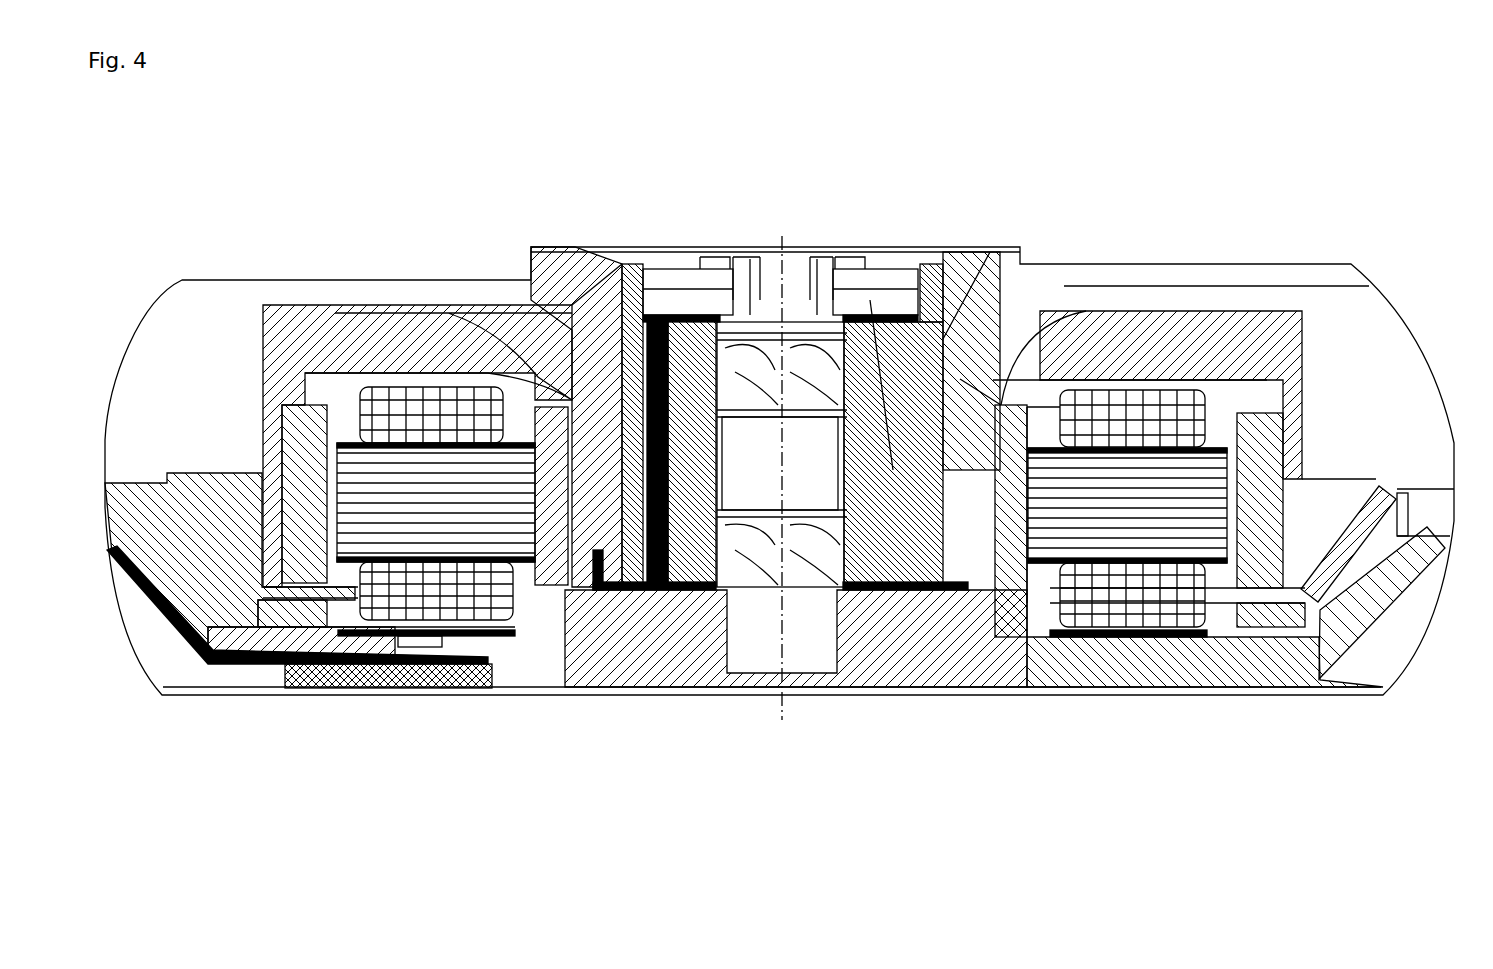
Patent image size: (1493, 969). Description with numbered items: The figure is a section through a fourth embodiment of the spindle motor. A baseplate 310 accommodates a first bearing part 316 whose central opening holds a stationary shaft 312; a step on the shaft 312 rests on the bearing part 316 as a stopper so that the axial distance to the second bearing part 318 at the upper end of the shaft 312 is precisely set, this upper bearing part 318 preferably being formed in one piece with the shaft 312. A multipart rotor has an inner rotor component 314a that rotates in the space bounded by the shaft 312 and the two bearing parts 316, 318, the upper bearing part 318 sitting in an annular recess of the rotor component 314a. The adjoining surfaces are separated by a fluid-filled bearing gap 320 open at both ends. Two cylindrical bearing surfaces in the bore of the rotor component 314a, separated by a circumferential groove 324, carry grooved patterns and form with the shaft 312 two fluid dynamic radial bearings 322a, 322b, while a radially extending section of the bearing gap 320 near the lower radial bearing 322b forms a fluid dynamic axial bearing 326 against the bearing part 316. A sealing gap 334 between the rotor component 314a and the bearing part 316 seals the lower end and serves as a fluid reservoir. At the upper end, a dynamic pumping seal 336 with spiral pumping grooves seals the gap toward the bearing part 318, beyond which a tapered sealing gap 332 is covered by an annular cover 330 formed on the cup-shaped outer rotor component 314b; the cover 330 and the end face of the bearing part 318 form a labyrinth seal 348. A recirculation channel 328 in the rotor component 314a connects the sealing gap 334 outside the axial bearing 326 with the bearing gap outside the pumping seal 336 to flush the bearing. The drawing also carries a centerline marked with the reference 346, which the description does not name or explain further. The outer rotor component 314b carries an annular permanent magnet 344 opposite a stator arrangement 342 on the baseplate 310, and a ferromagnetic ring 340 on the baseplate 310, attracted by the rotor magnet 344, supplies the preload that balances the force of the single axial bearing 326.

The baseplate 310 is at (1140, 670).
The shaft 312 is at (818, 648).
The inner rotor component 314a is at (1037, 265).
The outer rotor component 314b is at (1110, 265).
The first bearing part 316 is at (888, 667).
The second bearing part 318 is at (840, 252).
The bearing gap 320 is at (713, 560).
The radial bearing 322a is at (760, 252).
The radial bearing 322b is at (760, 560).
The circumferential groove 324 is at (957, 252).
The axial bearing 326 is at (680, 590).
The recirculation channel 328 is at (608, 590).
The cover 330 is at (668, 252).
The sealing gap 332 is at (637, 252).
The sealing gap 334 is at (985, 540).
The dynamic pumping seal 336 is at (727, 252).
The ferromagnetic ring 340 is at (283, 600).
The stator arrangement 342 is at (495, 540).
The permanent magnet 344 is at (210, 650).
The rotation axis 346 is at (780, 252).
The labyrinth seal 348 is at (870, 300).